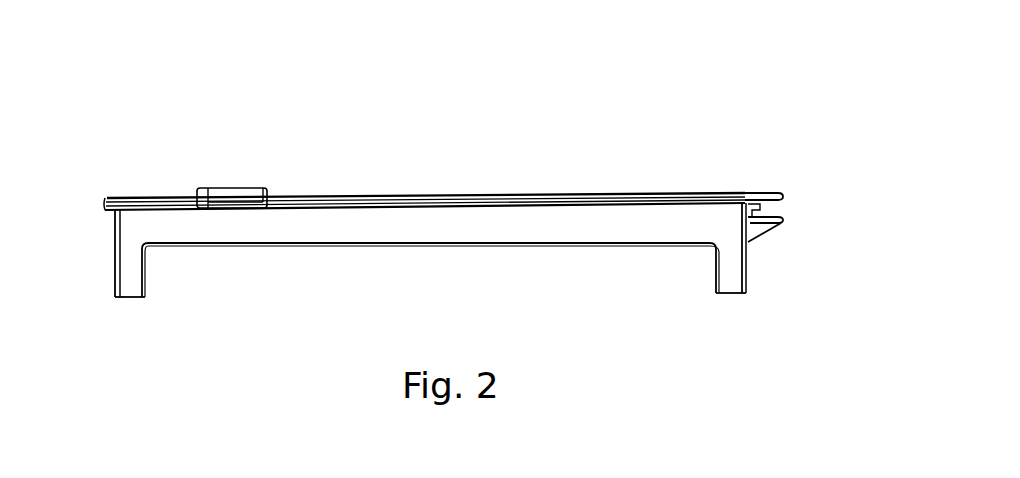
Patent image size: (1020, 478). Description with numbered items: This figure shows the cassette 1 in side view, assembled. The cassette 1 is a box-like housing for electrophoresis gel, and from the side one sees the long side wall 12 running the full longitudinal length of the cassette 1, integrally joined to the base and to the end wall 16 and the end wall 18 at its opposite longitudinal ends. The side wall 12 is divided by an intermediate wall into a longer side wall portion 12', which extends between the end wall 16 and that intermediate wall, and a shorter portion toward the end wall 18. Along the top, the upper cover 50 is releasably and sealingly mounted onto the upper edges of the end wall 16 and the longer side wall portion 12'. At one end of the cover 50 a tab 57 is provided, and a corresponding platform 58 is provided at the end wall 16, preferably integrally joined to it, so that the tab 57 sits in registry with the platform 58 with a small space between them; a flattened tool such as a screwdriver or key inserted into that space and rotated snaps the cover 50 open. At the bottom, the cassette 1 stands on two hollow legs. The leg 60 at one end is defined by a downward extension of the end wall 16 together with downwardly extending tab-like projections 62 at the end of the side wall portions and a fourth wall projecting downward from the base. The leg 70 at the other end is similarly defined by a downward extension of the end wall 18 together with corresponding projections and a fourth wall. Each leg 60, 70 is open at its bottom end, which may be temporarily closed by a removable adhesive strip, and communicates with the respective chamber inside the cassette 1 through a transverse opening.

The cassette 1 is at (748, 104).
The side wall 12 is at (424, 172).
The longer side wall portion 12' is at (425, 173).
The upper cover 50 is at (618, 195).
The tab 57 is at (768, 195).
The platform 58 is at (781, 214).
The end wall 16 is at (747, 280).
The end wall 18 is at (115, 253).
The tab-like projection 62 is at (723, 277).
The leg 60 is at (728, 295).
The leg 70 is at (132, 288).